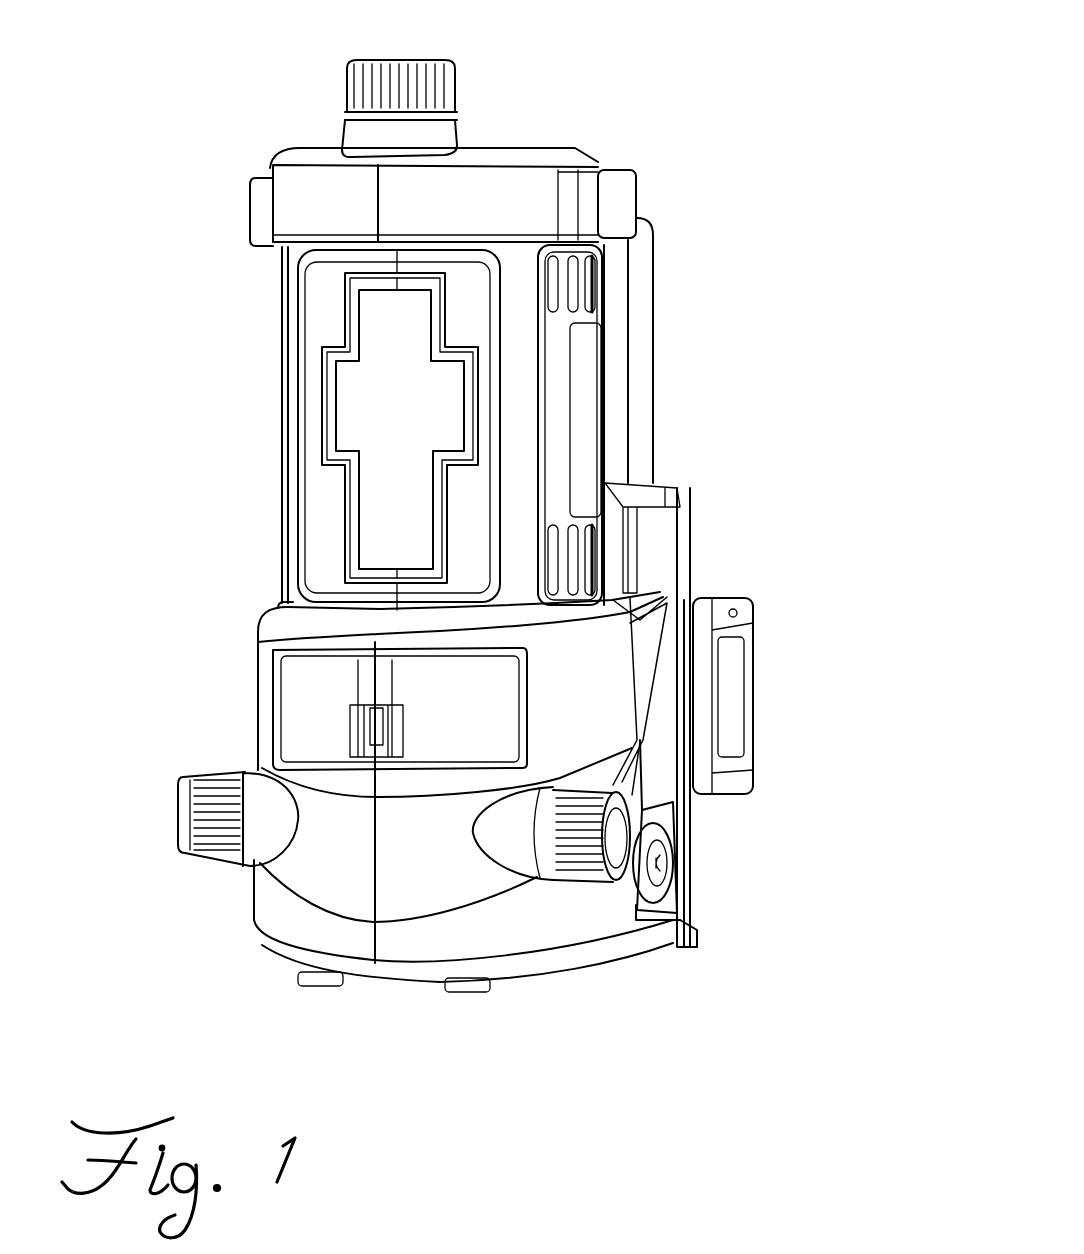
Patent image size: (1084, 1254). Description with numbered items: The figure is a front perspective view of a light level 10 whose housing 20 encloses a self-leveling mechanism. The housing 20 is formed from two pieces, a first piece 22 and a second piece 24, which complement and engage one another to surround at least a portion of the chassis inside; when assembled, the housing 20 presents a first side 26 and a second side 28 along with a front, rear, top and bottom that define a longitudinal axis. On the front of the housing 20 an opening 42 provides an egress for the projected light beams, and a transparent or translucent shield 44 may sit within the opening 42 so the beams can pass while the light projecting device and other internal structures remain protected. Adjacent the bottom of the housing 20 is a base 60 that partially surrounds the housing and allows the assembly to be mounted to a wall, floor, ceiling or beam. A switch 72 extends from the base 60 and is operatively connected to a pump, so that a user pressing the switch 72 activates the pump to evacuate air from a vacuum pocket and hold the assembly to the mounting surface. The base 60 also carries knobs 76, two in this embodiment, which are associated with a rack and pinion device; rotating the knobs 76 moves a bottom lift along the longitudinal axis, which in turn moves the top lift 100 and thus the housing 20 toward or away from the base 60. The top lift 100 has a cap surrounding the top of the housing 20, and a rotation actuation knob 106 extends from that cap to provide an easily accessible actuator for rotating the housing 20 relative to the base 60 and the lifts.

The light level 10 is at (640, 80).
The housing 20 is at (293, 80).
The first piece 22 is at (518, 258).
The second piece 24 is at (312, 306).
The first side 26 is at (600, 318).
The second side 28 is at (283, 418).
The opening 42 is at (365, 440).
The shield 44 is at (418, 426).
The base 60 is at (550, 942).
The switch 72 is at (673, 873).
The knob 76 is at (183, 793).
The top lift 100 is at (290, 183).
The rotation actuation knob 106 is at (419, 60).